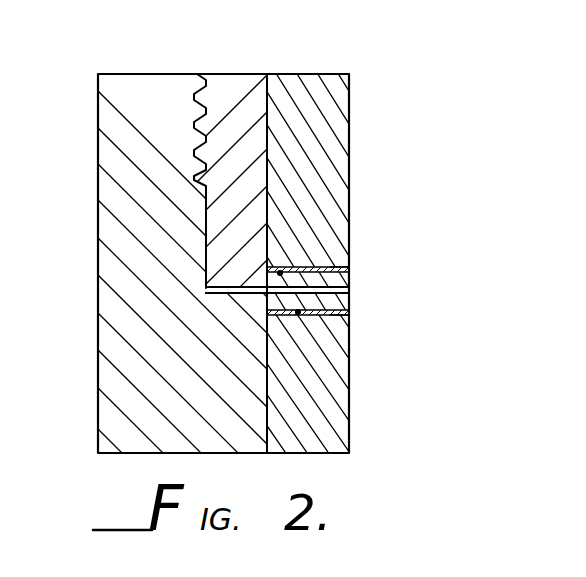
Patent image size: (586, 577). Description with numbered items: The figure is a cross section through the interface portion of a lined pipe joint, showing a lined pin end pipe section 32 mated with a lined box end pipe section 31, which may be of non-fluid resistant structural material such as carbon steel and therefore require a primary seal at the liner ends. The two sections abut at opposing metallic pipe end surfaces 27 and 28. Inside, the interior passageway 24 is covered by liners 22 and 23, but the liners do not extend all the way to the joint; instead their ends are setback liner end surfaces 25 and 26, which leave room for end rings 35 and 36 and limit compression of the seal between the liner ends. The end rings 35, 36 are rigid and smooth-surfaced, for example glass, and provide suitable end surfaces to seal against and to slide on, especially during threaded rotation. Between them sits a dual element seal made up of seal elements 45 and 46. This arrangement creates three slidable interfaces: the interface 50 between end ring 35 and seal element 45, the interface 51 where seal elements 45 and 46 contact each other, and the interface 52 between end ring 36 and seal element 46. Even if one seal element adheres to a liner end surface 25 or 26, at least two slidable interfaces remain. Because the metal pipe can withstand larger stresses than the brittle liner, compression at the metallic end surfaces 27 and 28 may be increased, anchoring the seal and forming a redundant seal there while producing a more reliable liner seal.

The liner 22 is at (349, 160).
The liner 23 is at (349, 413).
The interior passageway 24 is at (267, 112).
The liner end surface 25 is at (349, 263).
The liner end surface 26 is at (349, 319).
The pipe end surface 27 is at (230, 288).
The pipe end surface 28 is at (228, 297).
The lined box end pipe section 31 is at (107, 129).
The lined pin end pipe section 32 is at (248, 74).
The end ring 35 is at (340, 267).
The end ring 36 is at (332, 317).
The seal element 45 is at (280, 272).
The seal element 46 is at (298, 313).
The interface 50 is at (349, 271).
The interface 51 is at (349, 291).
The interface 52 is at (349, 316).